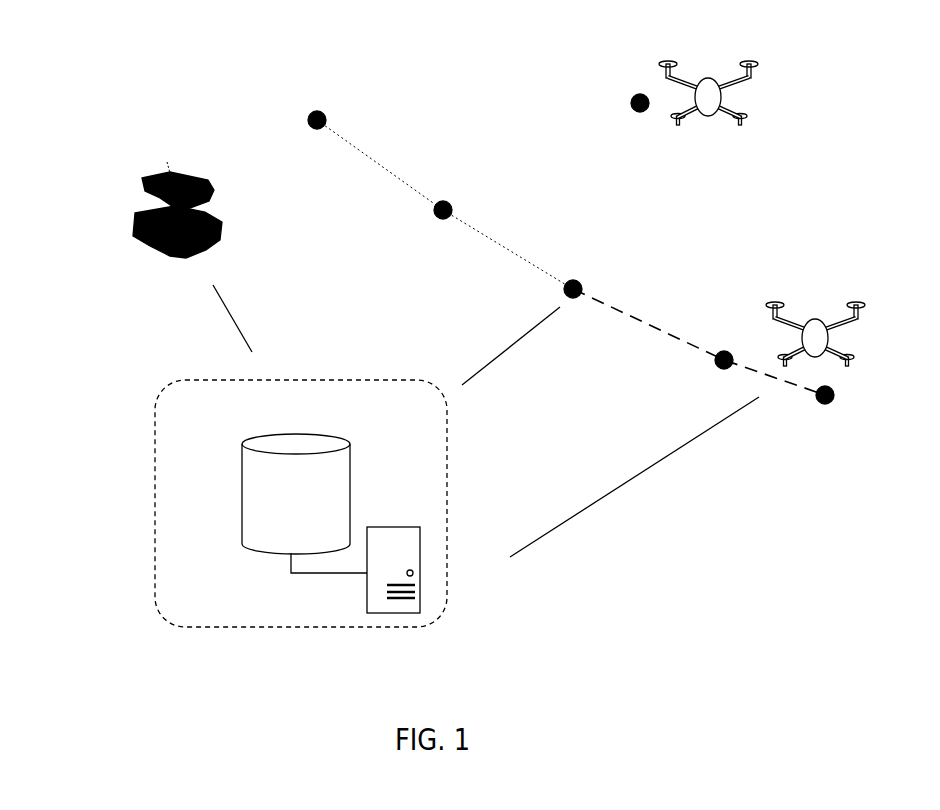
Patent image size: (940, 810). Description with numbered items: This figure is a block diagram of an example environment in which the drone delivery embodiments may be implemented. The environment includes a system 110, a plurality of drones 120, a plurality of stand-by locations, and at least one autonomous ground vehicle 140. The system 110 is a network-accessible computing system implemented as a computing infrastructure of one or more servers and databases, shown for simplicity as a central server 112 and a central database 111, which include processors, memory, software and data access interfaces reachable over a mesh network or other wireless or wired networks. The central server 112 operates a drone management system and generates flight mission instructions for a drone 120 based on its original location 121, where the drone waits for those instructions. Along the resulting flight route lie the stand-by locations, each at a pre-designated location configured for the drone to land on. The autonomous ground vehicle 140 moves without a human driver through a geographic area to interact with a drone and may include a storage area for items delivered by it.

The system 110 is at (303, 484).
The central database 111 is at (305, 543).
The central server 112 is at (338, 607).
The drone 120 is at (748, 56).
The original location 121 is at (834, 391).
The autonomous ground vehicle 140 is at (143, 178).